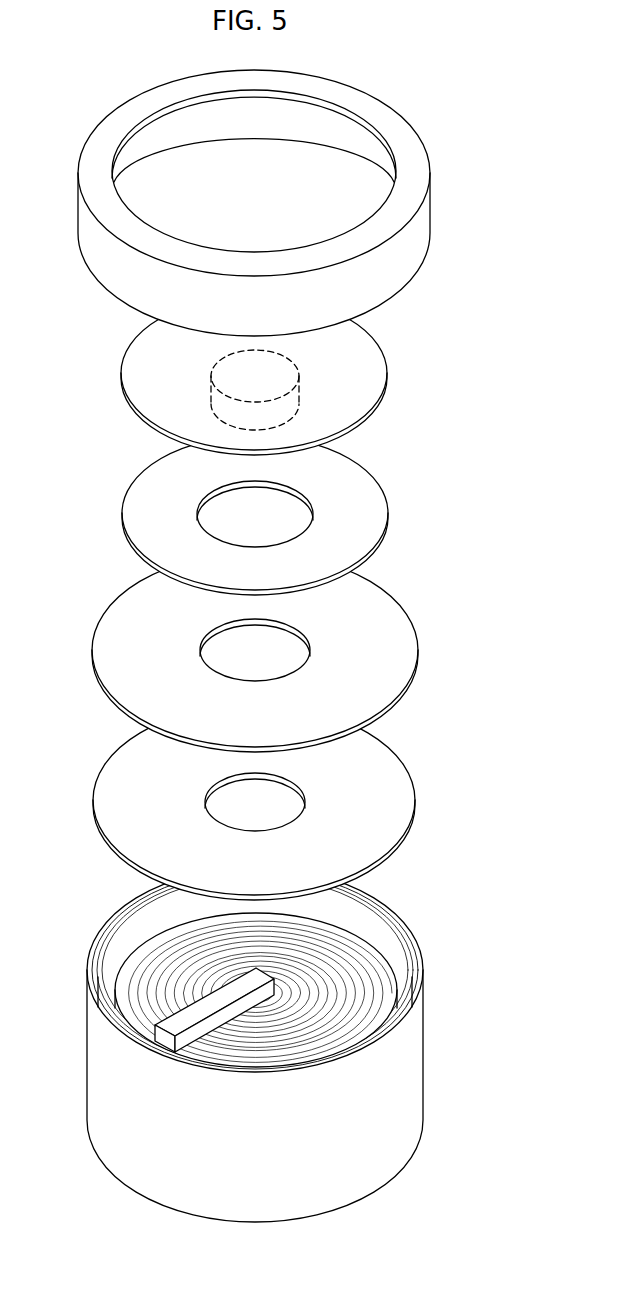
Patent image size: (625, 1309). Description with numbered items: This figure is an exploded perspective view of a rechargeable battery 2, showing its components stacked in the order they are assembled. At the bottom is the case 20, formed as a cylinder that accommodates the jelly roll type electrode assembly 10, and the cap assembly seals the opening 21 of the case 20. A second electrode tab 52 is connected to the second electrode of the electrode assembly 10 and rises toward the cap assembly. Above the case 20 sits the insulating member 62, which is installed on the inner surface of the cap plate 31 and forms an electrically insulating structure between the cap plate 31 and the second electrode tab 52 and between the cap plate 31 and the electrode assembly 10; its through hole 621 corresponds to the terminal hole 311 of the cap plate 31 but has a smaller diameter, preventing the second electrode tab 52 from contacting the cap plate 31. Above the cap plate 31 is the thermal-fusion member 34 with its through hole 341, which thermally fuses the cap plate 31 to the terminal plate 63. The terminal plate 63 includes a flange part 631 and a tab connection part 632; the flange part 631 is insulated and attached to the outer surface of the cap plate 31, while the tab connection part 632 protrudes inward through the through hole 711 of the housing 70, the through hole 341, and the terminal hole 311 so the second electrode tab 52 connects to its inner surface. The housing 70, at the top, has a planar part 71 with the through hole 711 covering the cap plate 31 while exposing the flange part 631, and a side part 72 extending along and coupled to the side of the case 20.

The rechargeable battery 2 is at (76, 82).
The electrode assembly 10 is at (352, 948).
The case 20 is at (261, 1043).
The opening 21 is at (143, 907).
The cap plate 31 is at (278, 652).
The terminal hole 311 is at (195, 645).
The thermal-fusion member 34 is at (270, 515).
The through hole 341 is at (197, 507).
The second electrode tab 52 is at (183, 1017).
The insulating member 62 is at (277, 802).
The through hole 621 is at (197, 801).
The terminal plate 63 is at (313, 375).
The flange part 631 is at (386, 362).
The tab connection part 632 is at (292, 377).
The housing 70 is at (305, 186).
The planar part 71 is at (285, 156).
The through hole 711 is at (340, 108).
The side part 72 is at (458, 228).